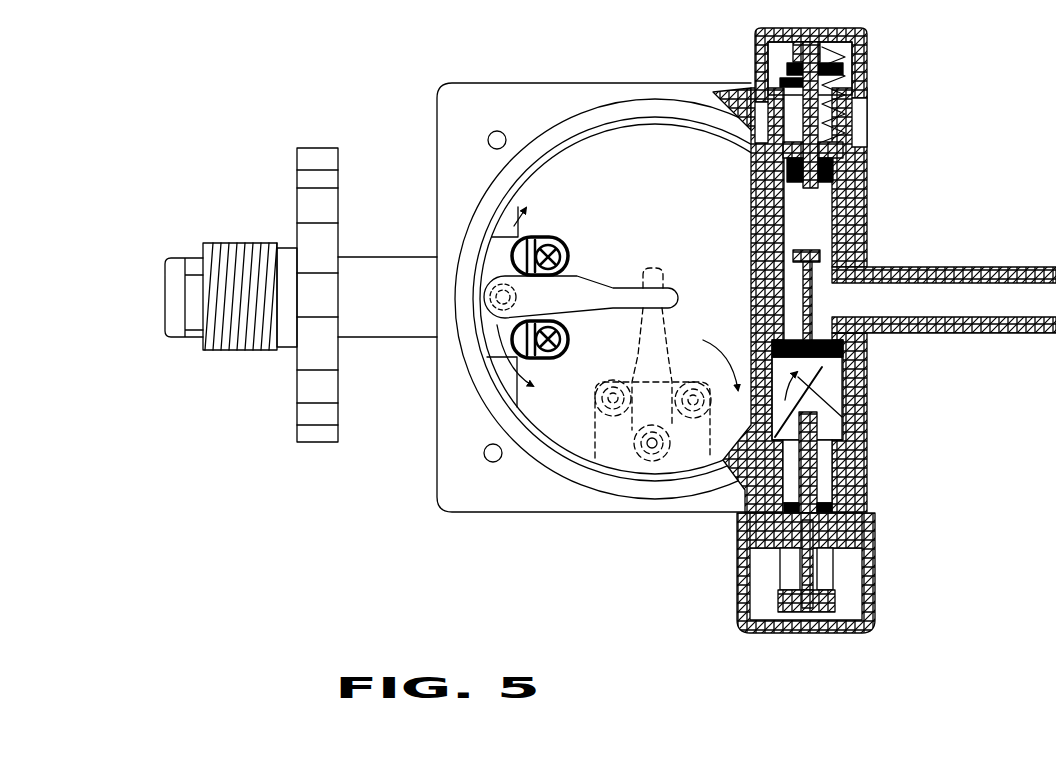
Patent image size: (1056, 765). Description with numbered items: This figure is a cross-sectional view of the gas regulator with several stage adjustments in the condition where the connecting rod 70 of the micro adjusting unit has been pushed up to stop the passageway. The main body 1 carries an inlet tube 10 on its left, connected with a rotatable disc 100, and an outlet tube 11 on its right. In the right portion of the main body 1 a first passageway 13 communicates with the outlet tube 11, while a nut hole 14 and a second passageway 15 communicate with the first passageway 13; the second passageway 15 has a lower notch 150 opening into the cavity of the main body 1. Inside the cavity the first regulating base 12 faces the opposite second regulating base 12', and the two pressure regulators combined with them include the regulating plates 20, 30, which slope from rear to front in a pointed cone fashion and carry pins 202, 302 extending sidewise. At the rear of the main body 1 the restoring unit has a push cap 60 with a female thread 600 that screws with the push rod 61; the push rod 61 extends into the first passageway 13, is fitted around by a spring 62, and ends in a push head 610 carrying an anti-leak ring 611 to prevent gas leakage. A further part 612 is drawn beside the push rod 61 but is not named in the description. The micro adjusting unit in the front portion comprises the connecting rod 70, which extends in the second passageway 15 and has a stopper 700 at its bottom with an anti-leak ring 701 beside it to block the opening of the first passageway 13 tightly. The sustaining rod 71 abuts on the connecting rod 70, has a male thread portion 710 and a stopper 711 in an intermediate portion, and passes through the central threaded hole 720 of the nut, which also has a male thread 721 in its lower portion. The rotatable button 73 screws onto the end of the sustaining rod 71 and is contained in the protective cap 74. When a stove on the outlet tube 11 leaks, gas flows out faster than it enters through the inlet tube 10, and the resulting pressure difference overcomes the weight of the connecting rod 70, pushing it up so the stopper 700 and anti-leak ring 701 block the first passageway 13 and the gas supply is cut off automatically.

The main body 1 is at (482, 93).
The inlet tube 10 is at (388, 323).
The rotatable disc 100 is at (322, 148).
The first regulating base 12 is at (564, 299).
The second regulating base 12' is at (606, 517).
The regulating plate 20 is at (588, 283).
The pin 202 is at (535, 237).
The regulating plate 30 is at (638, 362).
The pin 302 is at (597, 412).
The push cap 60 is at (867, 38).
The female thread 600 is at (830, 57).
The push rod 61 is at (855, 123).
The push head 610 is at (843, 182).
The anti-leak ring 611 is at (835, 175).
The spring seat 612 is at (795, 56).
The spring 62 is at (790, 115).
The first passageway 13 is at (825, 225).
The connecting rod 70 is at (818, 262).
The outlet tube 11 is at (1010, 260).
The anti-leak ring 701 is at (843, 353).
The stopper 700 is at (835, 362).
The second passageway 15 is at (830, 385).
The lower notch 150 is at (835, 428).
The nut hole 14 is at (845, 458).
The male thread 721 is at (835, 503).
The central threaded hole 720 is at (850, 533).
The protective cap 74 is at (866, 552).
The rotatable button 73 is at (838, 596).
The stopper 711 is at (790, 527).
The male thread portion 710 is at (798, 575).
The sustaining rod 71 is at (808, 608).